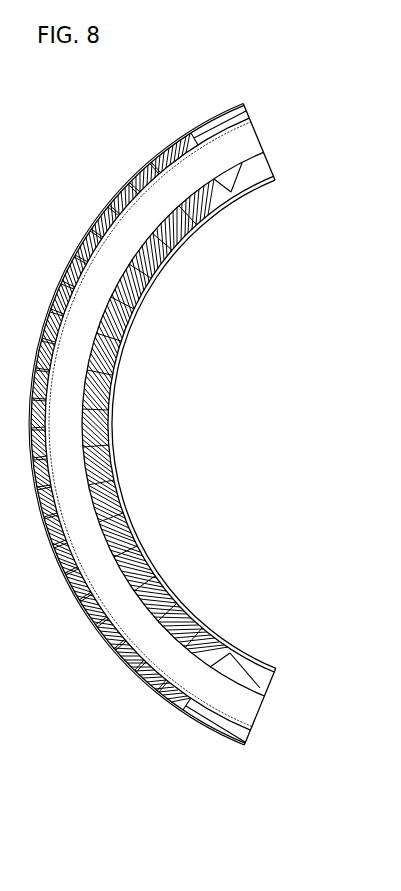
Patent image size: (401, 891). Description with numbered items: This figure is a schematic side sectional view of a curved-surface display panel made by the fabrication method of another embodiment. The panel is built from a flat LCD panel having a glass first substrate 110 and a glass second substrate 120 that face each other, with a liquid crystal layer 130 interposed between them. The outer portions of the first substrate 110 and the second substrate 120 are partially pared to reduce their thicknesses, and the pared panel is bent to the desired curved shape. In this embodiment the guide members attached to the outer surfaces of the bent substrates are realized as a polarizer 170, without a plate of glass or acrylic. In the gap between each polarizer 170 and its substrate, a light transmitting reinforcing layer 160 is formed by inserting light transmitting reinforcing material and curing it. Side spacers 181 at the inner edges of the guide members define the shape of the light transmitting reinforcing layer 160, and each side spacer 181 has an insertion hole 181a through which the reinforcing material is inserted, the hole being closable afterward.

The first substrate 110 is at (272, 687).
The second substrate 120 is at (255, 733).
The liquid crystal layer 130 is at (262, 714).
The light transmitting reinforcing layer 160 is at (112, 418).
The polarizer 170 is at (235, 637).
The side spacer 181 is at (153, 577).
The insertion hole 181a is at (60, 463).